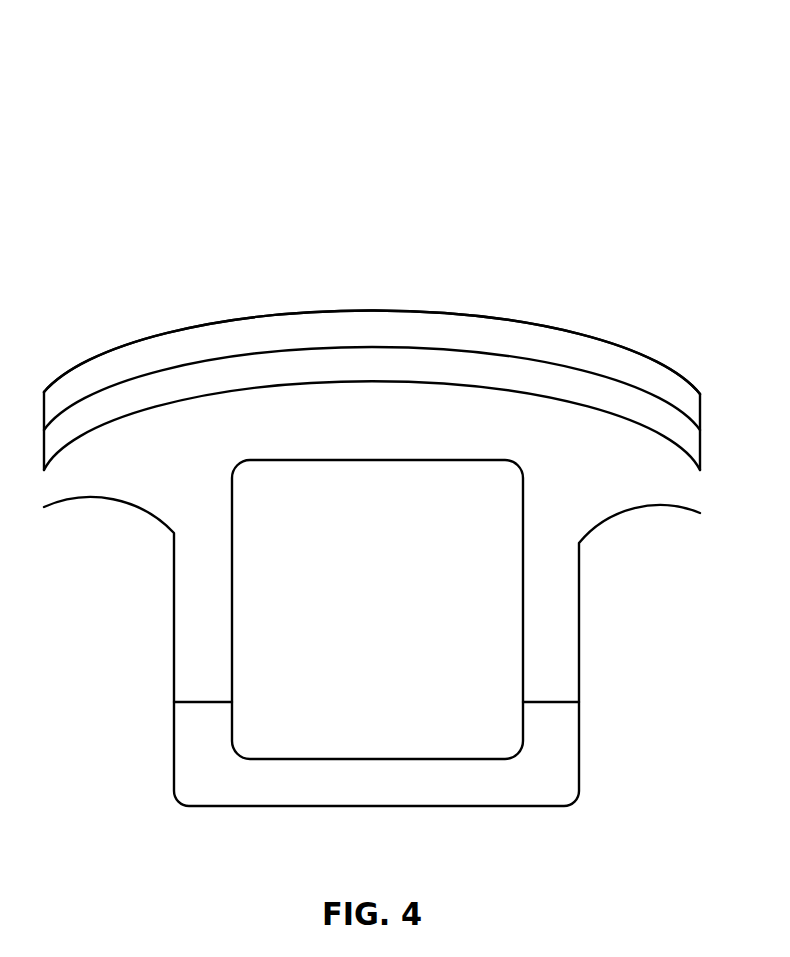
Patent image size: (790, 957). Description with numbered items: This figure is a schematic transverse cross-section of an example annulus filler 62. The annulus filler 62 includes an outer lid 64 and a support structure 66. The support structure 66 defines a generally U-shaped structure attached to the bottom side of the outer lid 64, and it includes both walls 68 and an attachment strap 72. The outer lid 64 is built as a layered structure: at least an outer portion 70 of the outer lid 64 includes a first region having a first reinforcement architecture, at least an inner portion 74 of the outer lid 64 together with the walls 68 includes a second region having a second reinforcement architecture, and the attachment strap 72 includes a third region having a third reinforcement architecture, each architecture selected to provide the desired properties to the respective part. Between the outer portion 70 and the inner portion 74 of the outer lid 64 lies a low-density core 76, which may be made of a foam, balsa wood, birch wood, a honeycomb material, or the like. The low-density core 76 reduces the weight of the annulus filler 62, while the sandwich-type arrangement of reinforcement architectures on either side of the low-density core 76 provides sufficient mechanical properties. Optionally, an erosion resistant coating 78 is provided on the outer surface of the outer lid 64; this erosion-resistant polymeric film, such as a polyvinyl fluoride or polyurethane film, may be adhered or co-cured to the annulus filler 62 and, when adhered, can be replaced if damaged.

The annulus filler 62 is at (96, 125).
The outer lid 64 is at (284, 290).
The support structure 66 is at (588, 664).
The walls 68 is at (195, 601).
The outer portion 70 is at (127, 359).
The attachment strap 72 is at (222, 788).
The inner portion 74 is at (223, 422).
The low-density core 76 is at (494, 366).
The erosion resistant coating 78 is at (598, 338).